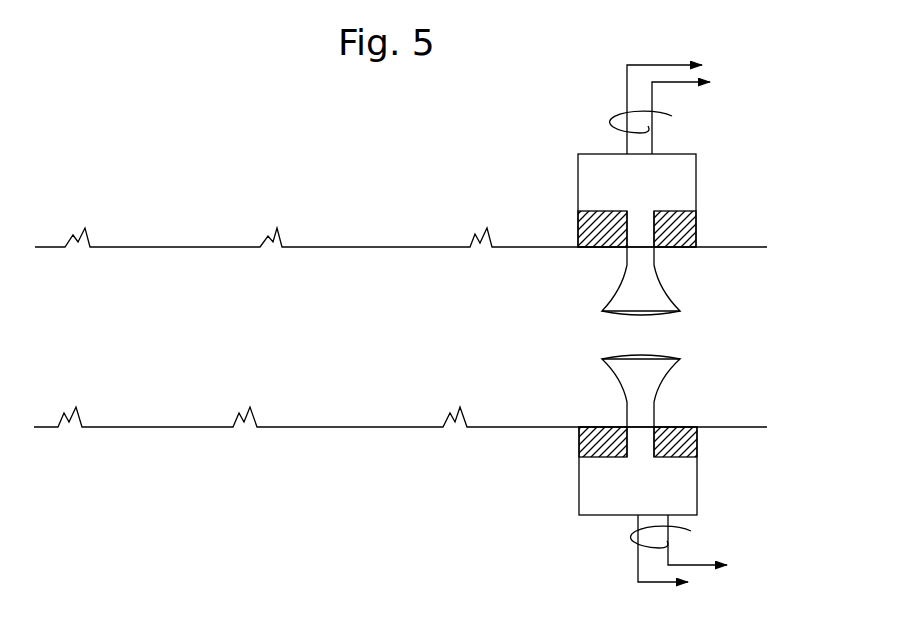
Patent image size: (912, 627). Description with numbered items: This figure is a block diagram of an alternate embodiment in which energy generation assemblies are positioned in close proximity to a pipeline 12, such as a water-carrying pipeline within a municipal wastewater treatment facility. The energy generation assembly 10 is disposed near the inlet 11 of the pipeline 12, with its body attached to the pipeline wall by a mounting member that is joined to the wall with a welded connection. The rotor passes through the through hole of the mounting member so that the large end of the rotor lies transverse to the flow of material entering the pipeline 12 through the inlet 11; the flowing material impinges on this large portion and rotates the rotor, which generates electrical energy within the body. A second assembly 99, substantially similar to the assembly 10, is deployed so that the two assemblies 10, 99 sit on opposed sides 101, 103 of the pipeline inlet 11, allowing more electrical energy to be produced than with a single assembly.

The energy generation assembly 10 is at (570, 136).
The inlet 11 is at (814, 337).
The pipeline 12 is at (344, 431).
The assembly 99 is at (597, 530).
The side of the pipeline inlet 101 is at (742, 270).
The side of the pipeline inlet 103 is at (742, 403).